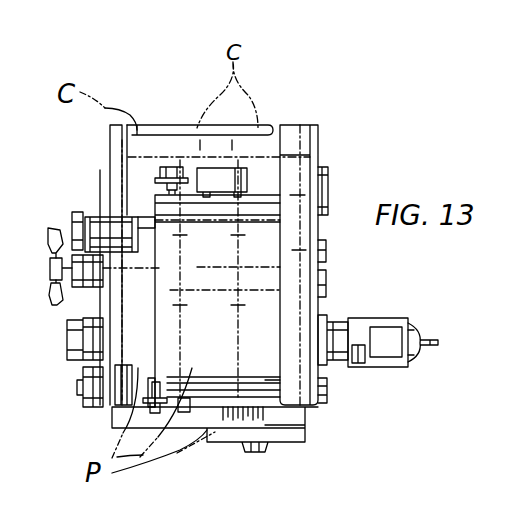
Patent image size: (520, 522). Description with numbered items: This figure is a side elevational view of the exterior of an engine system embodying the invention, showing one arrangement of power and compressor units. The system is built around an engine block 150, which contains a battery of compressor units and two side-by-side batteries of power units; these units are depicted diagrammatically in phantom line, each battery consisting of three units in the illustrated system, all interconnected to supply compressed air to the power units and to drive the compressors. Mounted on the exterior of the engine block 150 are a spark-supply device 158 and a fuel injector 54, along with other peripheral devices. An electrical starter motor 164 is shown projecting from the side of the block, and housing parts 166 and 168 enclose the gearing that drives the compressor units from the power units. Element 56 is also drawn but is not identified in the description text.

The fuel injector 54 is at (220, 172).
The reel 56 is at (138, 242).
The engine block 150 is at (297, 133).
The spark-supply device 158 is at (169, 166).
The electrical starter motor 164 is at (385, 327).
The housing part 166 is at (323, 176).
The housing part 168 is at (318, 388).